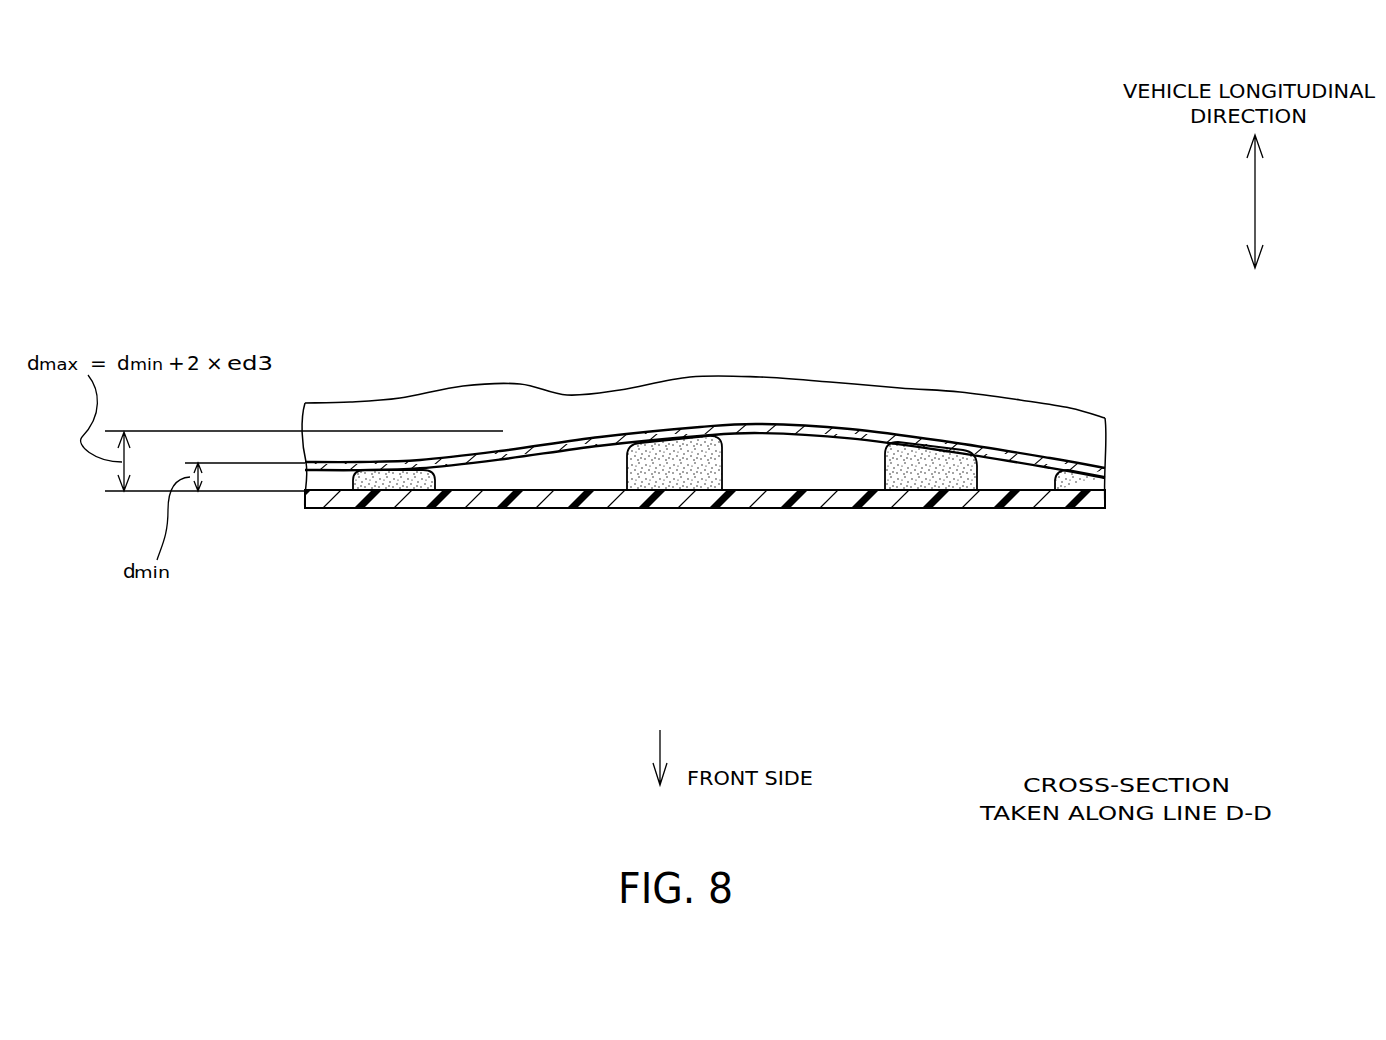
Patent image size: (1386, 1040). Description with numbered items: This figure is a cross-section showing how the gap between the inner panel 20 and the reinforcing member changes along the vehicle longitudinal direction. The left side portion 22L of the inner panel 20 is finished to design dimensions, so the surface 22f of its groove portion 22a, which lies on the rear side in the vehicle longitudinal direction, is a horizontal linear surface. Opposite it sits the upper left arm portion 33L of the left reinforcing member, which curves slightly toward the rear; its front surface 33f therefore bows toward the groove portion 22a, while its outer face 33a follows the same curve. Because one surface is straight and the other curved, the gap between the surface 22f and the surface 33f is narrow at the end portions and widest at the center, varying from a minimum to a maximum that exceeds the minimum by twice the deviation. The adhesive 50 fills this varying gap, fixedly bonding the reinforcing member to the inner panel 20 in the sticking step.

The upper left arm portion 33L is at (918, 363).
The outer surface of trim panel 33a is at (964, 392).
The front surface of the upper left arm portion 33f is at (779, 440).
The adhesive 50 is at (724, 464).
The left side portion of the inner panel 22L is at (705, 579).
The inner panel 20 is at (705, 579).
The surface of the groove portion 22f is at (827, 490).
The groove portion 22a is at (967, 508).